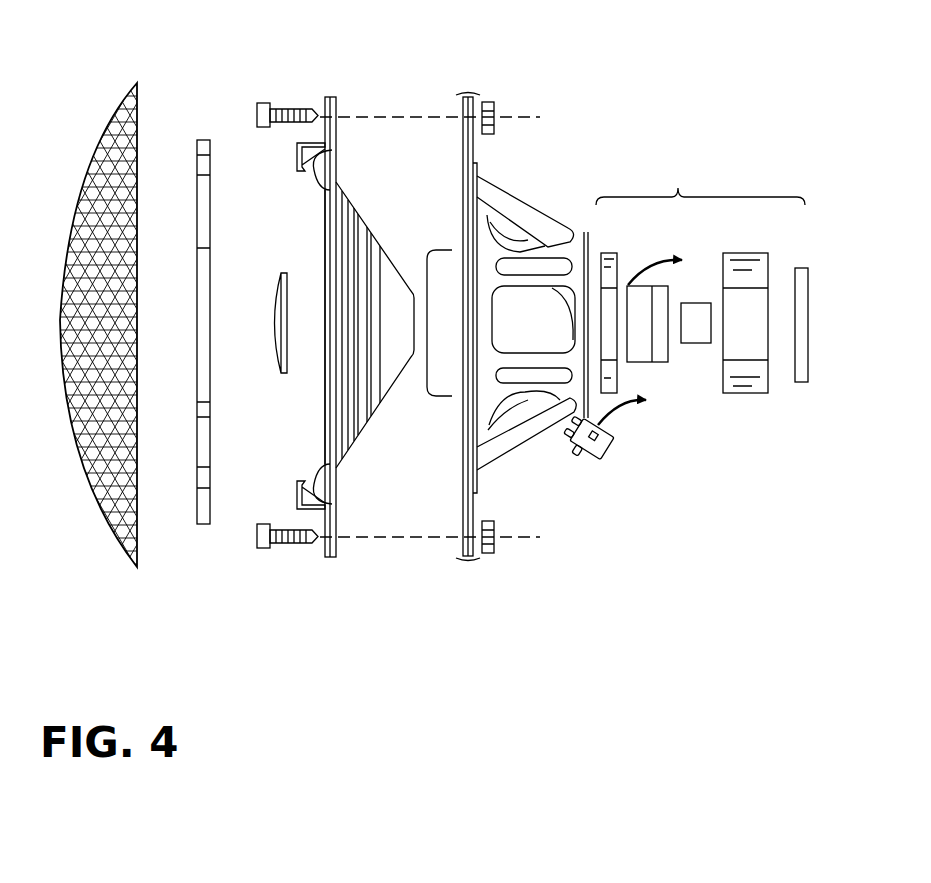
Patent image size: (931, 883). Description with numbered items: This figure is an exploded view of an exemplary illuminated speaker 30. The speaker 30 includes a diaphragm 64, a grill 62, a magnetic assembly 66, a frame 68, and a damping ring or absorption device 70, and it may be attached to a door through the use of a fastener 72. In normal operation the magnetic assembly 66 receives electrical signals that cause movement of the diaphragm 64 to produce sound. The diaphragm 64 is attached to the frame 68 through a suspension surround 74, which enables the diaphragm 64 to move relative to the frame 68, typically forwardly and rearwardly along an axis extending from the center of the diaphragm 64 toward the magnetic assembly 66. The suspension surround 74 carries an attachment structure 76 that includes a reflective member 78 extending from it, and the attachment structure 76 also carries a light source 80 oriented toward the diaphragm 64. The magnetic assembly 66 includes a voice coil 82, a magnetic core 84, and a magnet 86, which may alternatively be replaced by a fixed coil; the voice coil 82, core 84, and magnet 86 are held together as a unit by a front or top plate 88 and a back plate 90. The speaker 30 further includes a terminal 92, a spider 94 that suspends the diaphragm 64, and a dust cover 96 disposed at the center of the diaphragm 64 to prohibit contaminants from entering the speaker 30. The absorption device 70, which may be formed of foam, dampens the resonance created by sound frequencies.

The speaker 30 is at (546, 130).
The grill 62 is at (97, 135).
The diaphragm 64 is at (362, 228).
The magnetic assembly 66 is at (718, 318).
The frame 68 is at (578, 235).
The absorption device 70 is at (196, 150).
The fastener 72 is at (267, 105).
The suspension surround 74 is at (323, 481).
The attachment structure 76 is at (261, 313).
The reflective member 78 is at (297, 163).
The light source 80 is at (332, 152).
The voice coil 82 is at (645, 358).
The magnetic core 84 is at (697, 343).
The magnet 86 is at (752, 390).
The top plate 88 is at (608, 395).
The back plate 90 is at (803, 375).
The terminal 92 is at (600, 455).
The spider 94 is at (440, 388).
The dust cover 96 is at (270, 337).